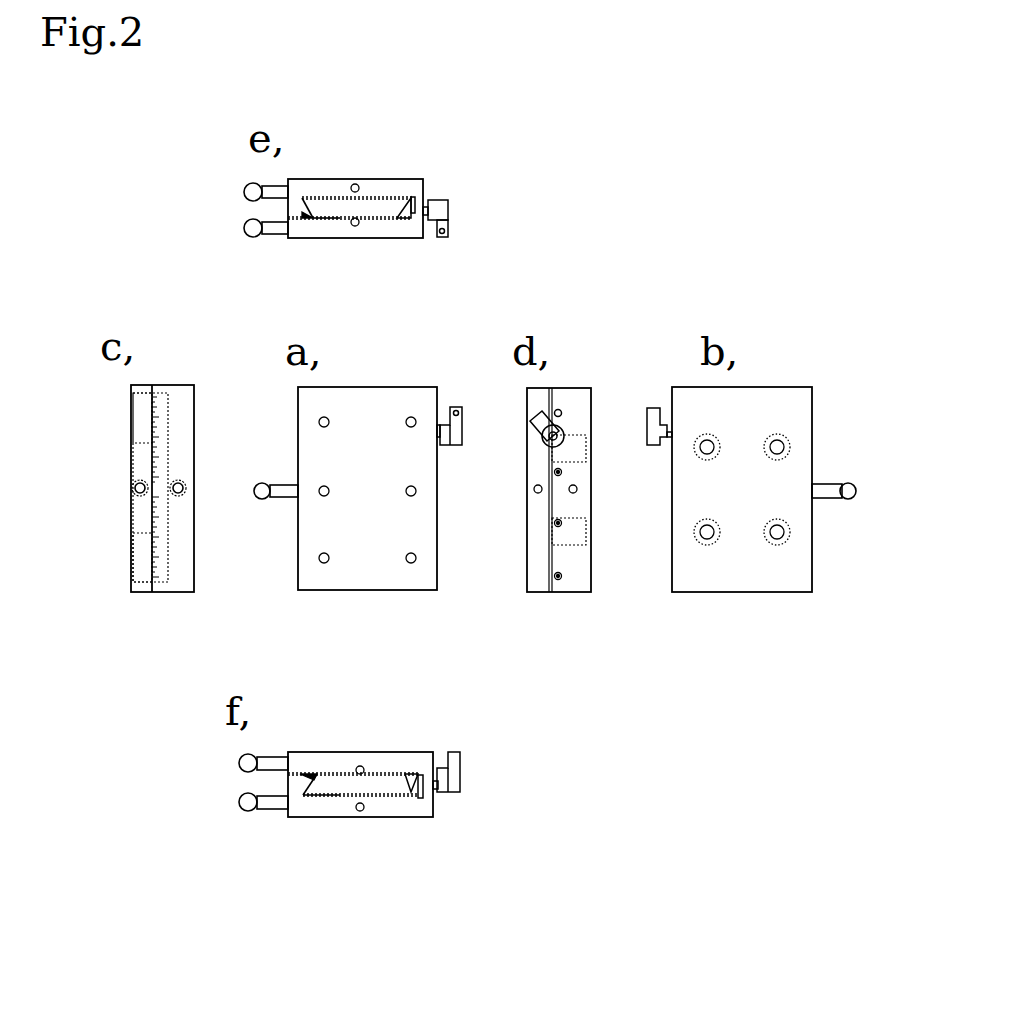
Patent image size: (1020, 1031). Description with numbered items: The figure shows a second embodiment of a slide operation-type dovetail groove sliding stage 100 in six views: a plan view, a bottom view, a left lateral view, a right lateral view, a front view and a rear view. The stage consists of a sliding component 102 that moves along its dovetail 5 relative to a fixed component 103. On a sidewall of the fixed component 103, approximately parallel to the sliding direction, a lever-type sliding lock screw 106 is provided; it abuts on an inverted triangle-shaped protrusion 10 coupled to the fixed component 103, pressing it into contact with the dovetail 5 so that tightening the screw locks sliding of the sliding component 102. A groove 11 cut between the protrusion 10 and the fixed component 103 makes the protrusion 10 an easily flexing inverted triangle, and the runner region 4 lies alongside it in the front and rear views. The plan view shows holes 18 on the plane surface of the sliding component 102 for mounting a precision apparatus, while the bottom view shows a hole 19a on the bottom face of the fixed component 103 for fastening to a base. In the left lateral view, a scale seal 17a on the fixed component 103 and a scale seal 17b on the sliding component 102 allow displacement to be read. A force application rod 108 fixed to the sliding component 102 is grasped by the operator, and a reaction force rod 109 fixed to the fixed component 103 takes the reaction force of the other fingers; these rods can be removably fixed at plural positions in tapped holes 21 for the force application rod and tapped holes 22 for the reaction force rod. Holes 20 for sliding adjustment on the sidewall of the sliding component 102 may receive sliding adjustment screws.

The slide operation-type dovetail groove sliding stage 100 is at (597, 298).
The sliding component 102 is at (313, 233).
The fixed component 103 is at (402, 186).
The runner groove 4 is at (340, 203).
The dovetail 5 is at (330, 211).
The inverted triangle-shaped protrusion 10 is at (404, 221).
The groove 11 is at (417, 204).
The scale seal 17a is at (170, 414).
The scale seal 17b is at (133, 415).
The holes for mounting a precision apparatus 18 is at (330, 580).
The hole for fixedly fastening to a base 19a is at (707, 440).
The holes for sliding adjustment 20 is at (553, 577).
The tapped hole for force application rod 21 is at (359, 227).
The tapped hole for reaction force rod 22 is at (357, 183).
The sliding lock screw 106 is at (449, 212).
The force application rod 108 is at (244, 228).
The reaction force rod 109 is at (244, 192).